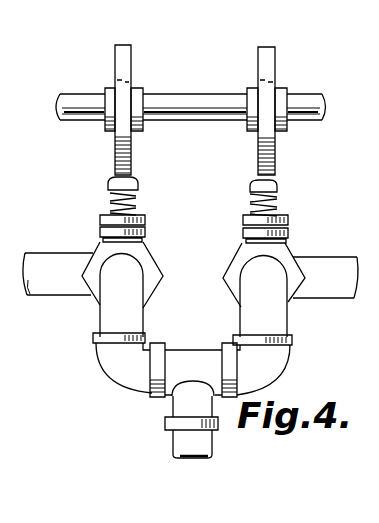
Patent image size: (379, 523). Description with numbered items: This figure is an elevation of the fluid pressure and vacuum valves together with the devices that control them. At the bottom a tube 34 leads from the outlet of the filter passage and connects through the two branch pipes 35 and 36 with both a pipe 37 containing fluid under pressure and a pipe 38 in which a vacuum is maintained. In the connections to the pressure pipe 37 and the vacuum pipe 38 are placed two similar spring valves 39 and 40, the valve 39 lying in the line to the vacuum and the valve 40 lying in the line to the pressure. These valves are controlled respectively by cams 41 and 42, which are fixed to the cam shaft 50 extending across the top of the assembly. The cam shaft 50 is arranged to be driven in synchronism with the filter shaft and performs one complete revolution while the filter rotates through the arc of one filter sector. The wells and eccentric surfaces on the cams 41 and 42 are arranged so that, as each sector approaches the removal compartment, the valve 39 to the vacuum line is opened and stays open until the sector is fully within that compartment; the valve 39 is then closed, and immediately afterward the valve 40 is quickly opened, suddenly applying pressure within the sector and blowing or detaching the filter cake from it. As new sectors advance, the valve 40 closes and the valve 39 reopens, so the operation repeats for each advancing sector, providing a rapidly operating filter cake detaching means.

The tube 34 is at (182, 442).
The branch pipe 35 is at (133, 323).
The branch pipe 36 is at (285, 327).
The pipe containing fluid under pressure 37 is at (347, 302).
The pipe in which a vacuum is maintained 38 is at (72, 298).
The spring valve 39 is at (153, 272).
The spring valve 40 is at (288, 258).
The cam 41 is at (128, 67).
The cam 42 is at (275, 67).
The cam shaft 50 is at (311, 118).